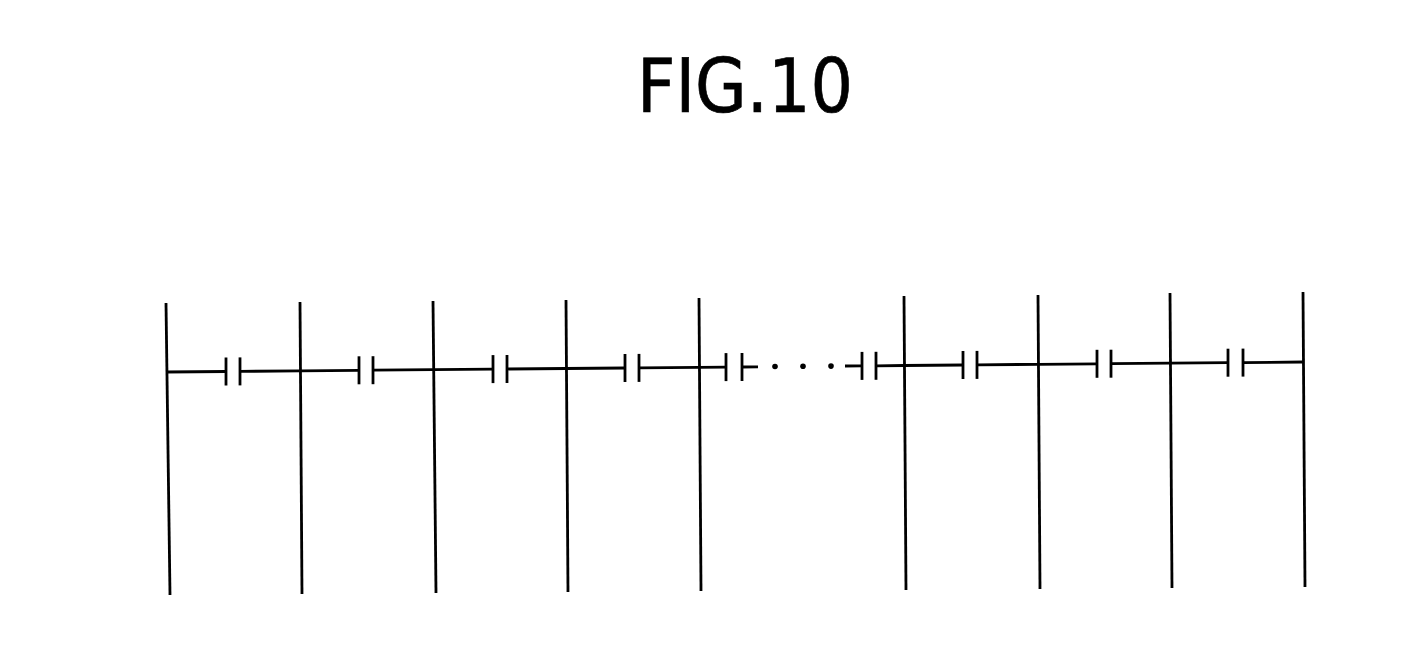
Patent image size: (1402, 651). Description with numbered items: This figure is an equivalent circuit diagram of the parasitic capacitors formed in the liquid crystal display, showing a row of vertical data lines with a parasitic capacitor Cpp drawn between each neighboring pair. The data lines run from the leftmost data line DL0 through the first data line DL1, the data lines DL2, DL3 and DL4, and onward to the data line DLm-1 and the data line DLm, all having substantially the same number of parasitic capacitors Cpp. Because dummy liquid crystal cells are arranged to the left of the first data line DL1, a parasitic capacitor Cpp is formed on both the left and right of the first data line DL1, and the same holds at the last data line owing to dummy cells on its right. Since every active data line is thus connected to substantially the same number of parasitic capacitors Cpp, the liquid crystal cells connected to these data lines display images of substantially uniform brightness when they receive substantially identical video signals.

The data line DL0 is at (167, 425).
The first data line DL1 is at (297, 424).
The data line DL2 is at (427, 422).
The data line DL3 is at (563, 422).
The data line DL4 is at (694, 420).
The data line DLm-1 is at (911, 417).
The data line DLm is at (1044, 415).
The parasitic capacitor Cpp is at (734, 397).